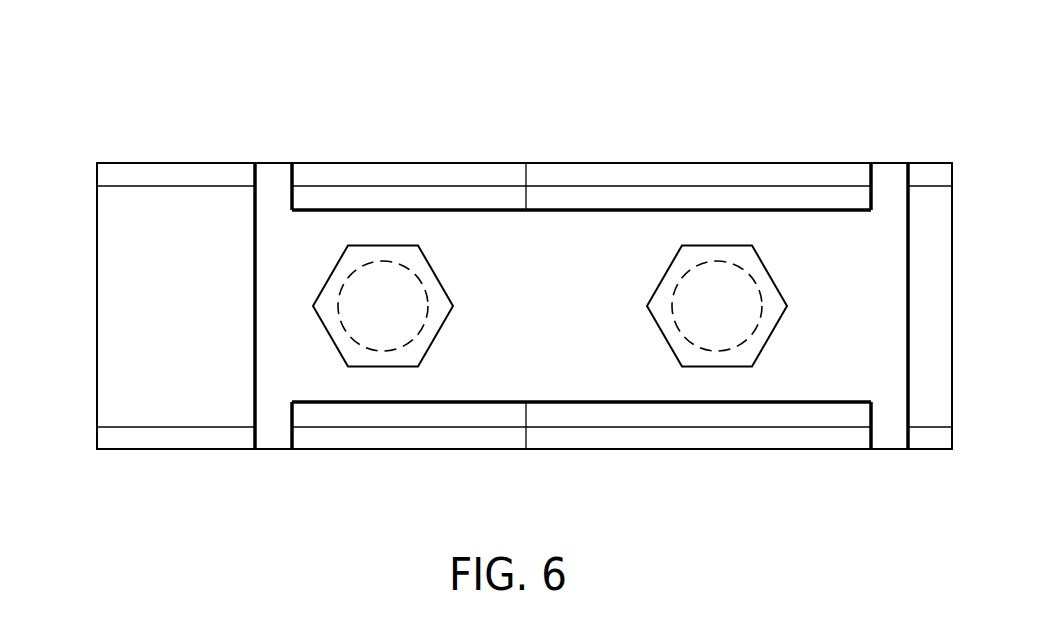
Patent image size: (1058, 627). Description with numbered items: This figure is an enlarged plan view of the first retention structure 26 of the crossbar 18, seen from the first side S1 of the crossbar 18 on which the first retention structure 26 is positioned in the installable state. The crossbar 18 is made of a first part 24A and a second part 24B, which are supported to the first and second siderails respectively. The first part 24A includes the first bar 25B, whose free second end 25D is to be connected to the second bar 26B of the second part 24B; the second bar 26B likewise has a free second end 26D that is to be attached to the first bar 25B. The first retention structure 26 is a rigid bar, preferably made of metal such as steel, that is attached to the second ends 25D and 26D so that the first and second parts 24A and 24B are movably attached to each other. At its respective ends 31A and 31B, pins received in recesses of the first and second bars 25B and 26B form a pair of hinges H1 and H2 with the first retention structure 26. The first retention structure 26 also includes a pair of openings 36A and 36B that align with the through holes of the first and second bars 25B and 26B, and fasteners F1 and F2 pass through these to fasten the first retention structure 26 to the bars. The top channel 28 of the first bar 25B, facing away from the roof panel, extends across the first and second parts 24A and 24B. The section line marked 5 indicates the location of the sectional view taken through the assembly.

The crossbar 18 is at (770, 103).
The first side S1 is at (80, 200).
The top channel 28 is at (140, 380).
The first bar 25B is at (167, 162).
The second end of the first bar 25D is at (477, 160).
The first retention structure 26 is at (367, 200).
The second end of the second bar 26D is at (565, 162).
The second bar 26B is at (792, 162).
The first end of the first retention structure 31A is at (253, 312).
The second end of the first retention structure 31B is at (910, 238).
The first hinge H1 is at (272, 160).
The second hinge H2 is at (889, 160).
The first opening 36A is at (418, 279).
The second opening 36B is at (752, 282).
The first fastener F1 is at (437, 337).
The second fastener F2 is at (660, 282).
The first part 24A is at (186, 453).
The second part 24B is at (720, 452).
The section line 5- 5 is at (526, 150).